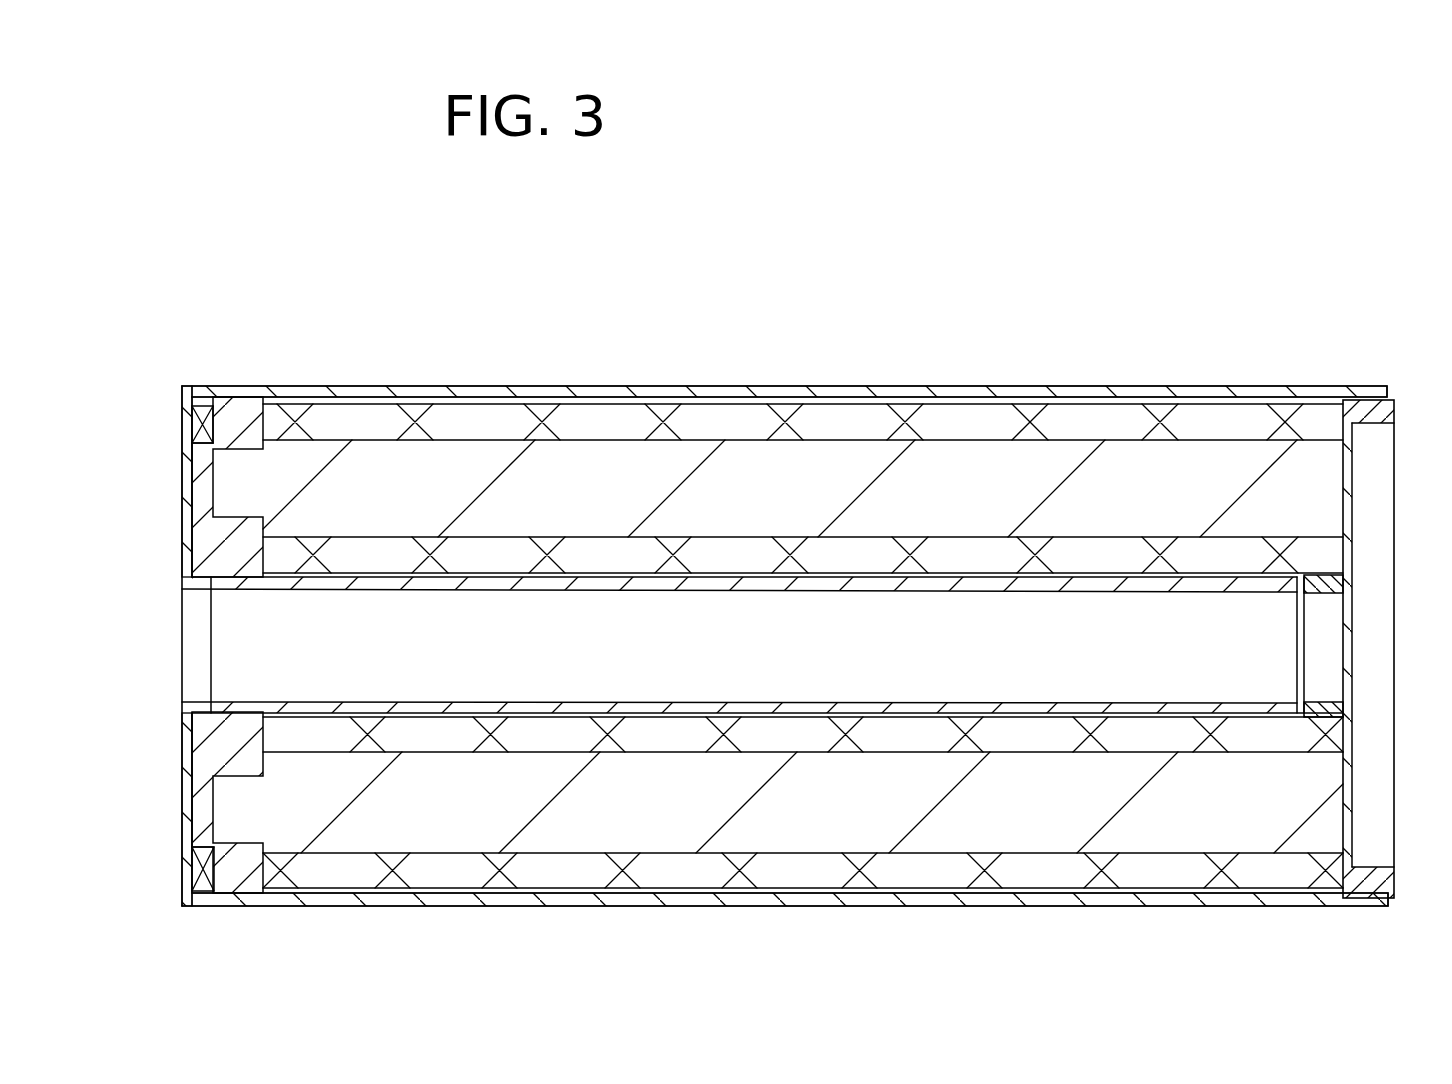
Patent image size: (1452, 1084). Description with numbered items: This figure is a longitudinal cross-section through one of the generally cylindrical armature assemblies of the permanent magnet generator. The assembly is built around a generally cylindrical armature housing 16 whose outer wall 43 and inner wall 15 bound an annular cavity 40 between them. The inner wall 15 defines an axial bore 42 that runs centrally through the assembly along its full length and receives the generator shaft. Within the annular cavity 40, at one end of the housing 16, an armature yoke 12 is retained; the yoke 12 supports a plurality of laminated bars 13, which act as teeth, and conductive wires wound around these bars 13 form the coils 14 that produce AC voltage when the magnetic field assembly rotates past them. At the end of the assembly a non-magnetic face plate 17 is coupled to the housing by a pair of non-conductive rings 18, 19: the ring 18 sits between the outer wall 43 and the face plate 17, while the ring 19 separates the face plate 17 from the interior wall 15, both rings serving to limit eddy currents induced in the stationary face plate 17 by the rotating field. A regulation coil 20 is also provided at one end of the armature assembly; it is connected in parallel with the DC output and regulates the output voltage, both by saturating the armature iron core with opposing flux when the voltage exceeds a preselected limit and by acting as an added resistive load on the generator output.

The armature yoke 12 is at (242, 885).
The laminated bars 13 is at (990, 468).
The coils 14 is at (1265, 882).
The inner wall 15 is at (766, 695).
The armature housing 16 is at (851, 912).
The non-magnetic face plate 17 is at (1353, 562).
The non-conductive ring 18 is at (1387, 412).
The non-conductive ring 19 is at (1333, 703).
The regulation coil 20 is at (203, 873).
The annular cavity 40 is at (766, 440).
The axial bore 42 is at (560, 653).
The outer wall 43 is at (1283, 389).